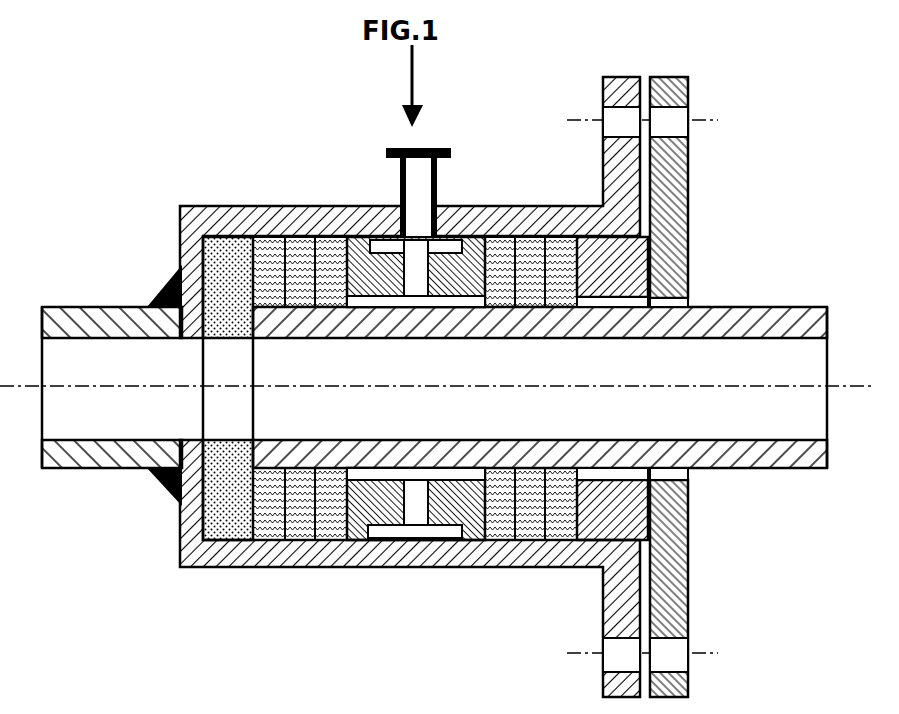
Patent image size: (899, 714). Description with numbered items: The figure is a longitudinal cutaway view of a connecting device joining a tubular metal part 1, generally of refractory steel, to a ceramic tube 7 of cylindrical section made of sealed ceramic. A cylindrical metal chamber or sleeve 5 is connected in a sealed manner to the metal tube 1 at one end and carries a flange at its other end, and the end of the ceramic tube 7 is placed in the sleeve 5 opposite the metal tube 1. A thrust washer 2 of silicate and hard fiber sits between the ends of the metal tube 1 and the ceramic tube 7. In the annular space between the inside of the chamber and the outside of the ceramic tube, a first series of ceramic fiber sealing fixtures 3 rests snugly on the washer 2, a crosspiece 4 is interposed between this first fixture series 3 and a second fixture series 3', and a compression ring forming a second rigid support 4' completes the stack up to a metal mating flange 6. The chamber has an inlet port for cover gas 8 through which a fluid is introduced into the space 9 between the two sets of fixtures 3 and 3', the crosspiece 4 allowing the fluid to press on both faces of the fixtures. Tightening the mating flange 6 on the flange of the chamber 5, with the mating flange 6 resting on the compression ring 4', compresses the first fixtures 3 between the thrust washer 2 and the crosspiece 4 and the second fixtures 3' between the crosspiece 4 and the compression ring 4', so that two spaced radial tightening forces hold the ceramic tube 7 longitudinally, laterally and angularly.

The metal tube 1 is at (110, 448).
The thrust washer 2 is at (230, 508).
The first series of sealing fixtures 3 is at (299, 436).
The second fixture series 3' is at (531, 435).
The crosspiece 4 is at (404, 435).
The compression ring 4' is at (594, 435).
The cylindrical metal chamber or sleeve 5 is at (417, 502).
The metal mating flange 6 is at (672, 557).
The ceramic tube 7 is at (773, 458).
The inlet port for cover gas 8 is at (400, 187).
The space 9 is at (390, 558).